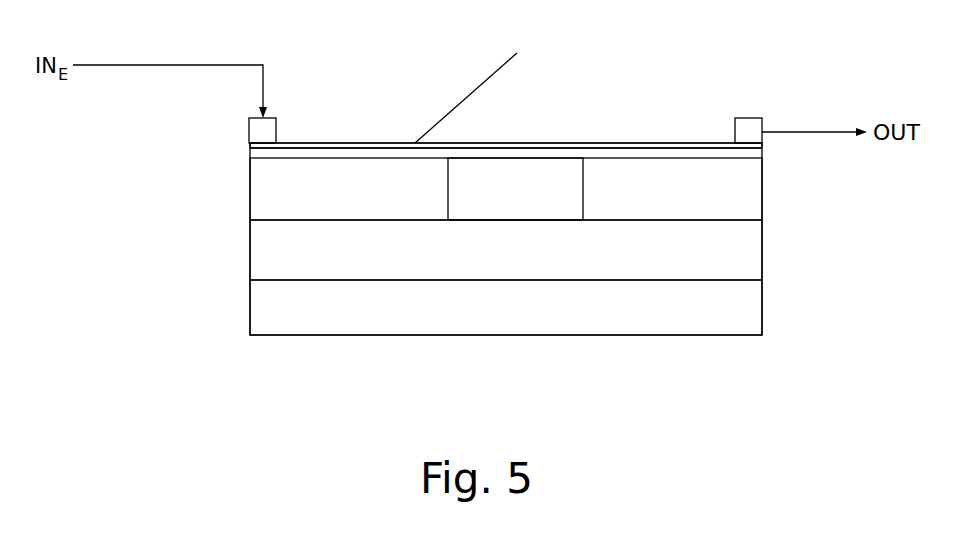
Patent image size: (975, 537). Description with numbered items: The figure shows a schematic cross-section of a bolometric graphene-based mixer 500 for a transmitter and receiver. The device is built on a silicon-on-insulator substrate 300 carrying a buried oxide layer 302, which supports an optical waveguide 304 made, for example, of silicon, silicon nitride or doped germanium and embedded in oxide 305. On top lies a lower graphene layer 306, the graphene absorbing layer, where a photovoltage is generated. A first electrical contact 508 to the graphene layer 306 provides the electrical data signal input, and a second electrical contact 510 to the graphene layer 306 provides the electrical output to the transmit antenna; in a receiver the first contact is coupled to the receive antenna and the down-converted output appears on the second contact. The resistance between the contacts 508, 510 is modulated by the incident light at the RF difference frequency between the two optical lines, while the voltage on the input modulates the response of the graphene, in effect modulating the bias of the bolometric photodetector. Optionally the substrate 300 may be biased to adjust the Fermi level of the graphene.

The bolometric graphene-based mixer 500 is at (762, 392).
The silicon substrate 300 is at (743, 318).
The buried oxide layer 302 is at (740, 262).
The optical waveguide 304 is at (515, 158).
The oxide 305 is at (745, 173).
The graphene layer 306 is at (618, 147).
The first electrical contact 508 is at (260, 131).
The second electrical contact 510 is at (749, 118).